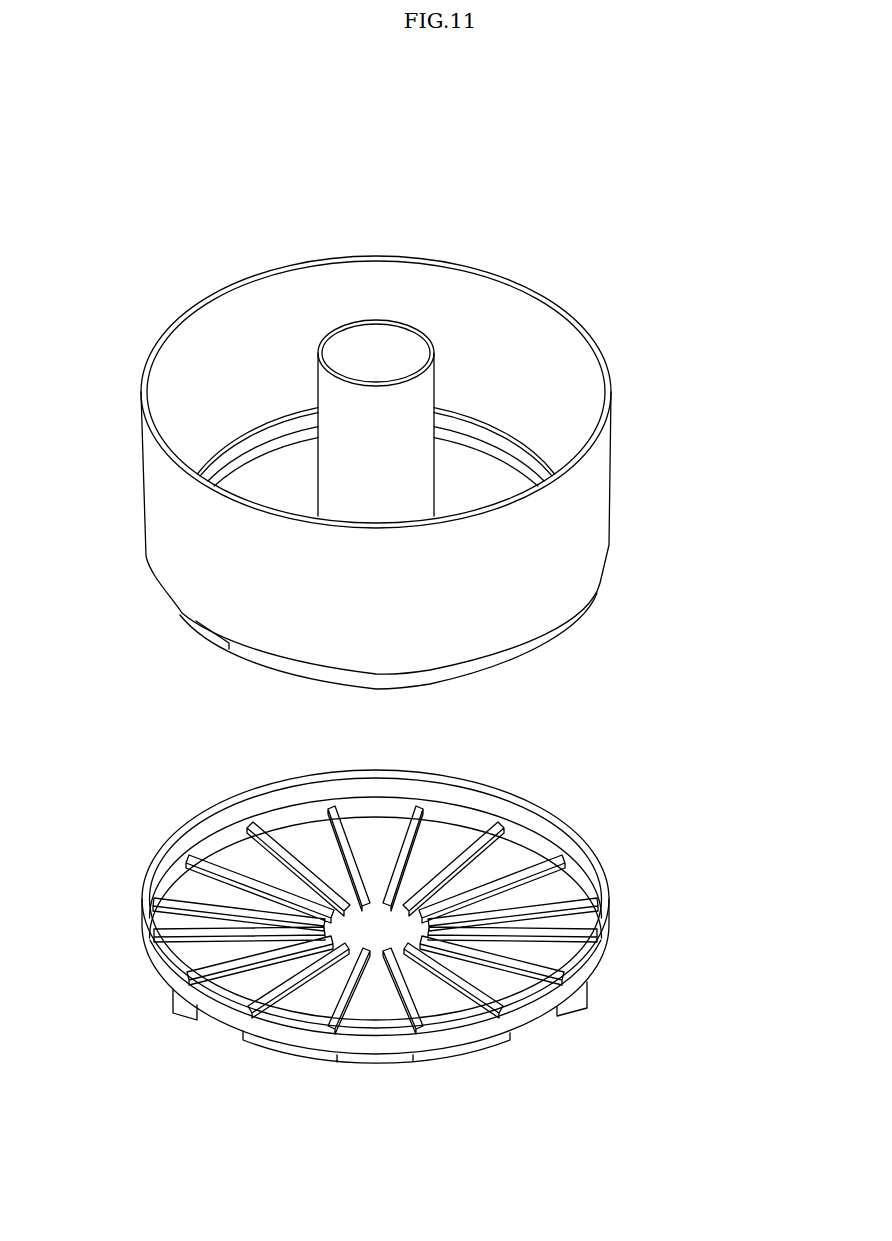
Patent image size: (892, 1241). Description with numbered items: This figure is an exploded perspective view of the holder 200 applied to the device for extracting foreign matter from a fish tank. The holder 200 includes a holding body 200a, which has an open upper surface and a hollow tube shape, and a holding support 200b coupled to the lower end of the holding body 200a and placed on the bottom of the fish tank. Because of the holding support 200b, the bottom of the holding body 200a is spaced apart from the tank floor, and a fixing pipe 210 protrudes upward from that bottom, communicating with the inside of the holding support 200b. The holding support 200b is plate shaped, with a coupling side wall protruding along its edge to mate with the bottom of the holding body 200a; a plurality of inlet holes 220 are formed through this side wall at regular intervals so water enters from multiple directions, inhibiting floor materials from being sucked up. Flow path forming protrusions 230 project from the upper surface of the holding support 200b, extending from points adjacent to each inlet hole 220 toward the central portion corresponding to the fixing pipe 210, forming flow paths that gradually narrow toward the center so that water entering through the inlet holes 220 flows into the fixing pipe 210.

The holder 200 is at (600, 163).
The holding body 200a is at (603, 492).
The holding support 200b is at (613, 893).
The fixing pipe 210 is at (322, 384).
The inlet hole 220 is at (218, 835).
The flow path forming protrusion 230 is at (180, 893).